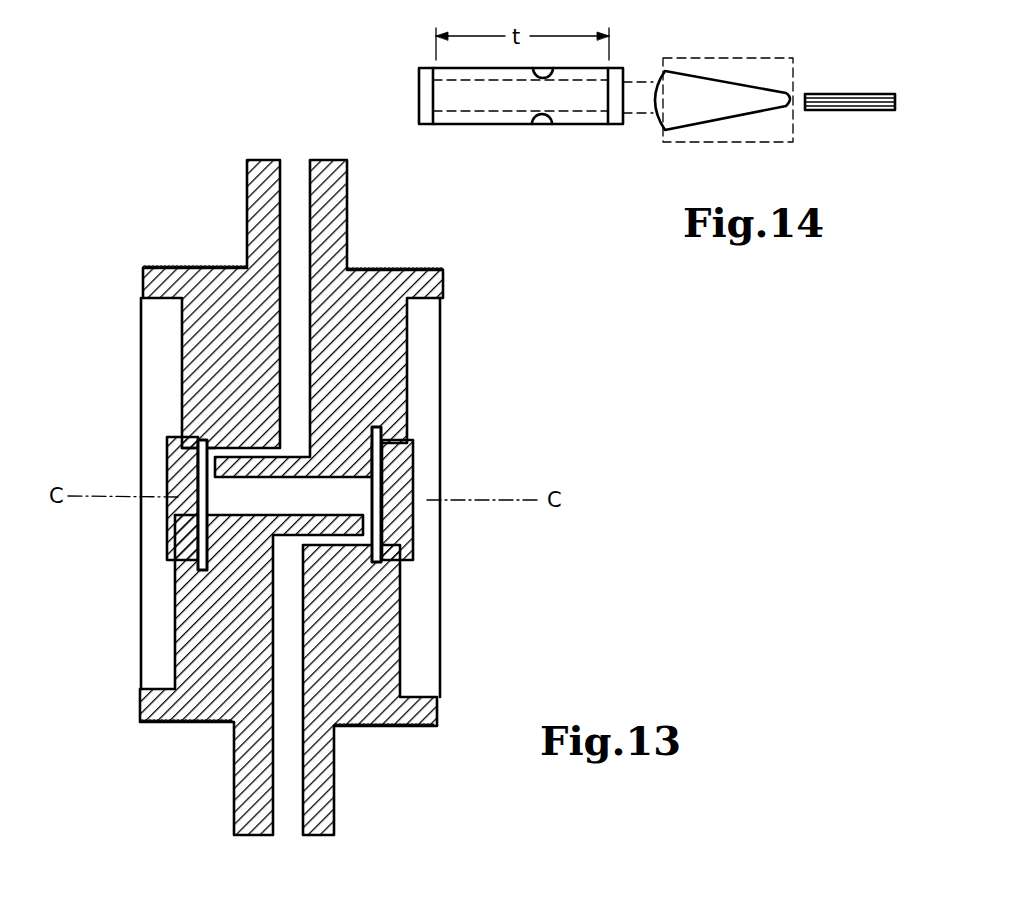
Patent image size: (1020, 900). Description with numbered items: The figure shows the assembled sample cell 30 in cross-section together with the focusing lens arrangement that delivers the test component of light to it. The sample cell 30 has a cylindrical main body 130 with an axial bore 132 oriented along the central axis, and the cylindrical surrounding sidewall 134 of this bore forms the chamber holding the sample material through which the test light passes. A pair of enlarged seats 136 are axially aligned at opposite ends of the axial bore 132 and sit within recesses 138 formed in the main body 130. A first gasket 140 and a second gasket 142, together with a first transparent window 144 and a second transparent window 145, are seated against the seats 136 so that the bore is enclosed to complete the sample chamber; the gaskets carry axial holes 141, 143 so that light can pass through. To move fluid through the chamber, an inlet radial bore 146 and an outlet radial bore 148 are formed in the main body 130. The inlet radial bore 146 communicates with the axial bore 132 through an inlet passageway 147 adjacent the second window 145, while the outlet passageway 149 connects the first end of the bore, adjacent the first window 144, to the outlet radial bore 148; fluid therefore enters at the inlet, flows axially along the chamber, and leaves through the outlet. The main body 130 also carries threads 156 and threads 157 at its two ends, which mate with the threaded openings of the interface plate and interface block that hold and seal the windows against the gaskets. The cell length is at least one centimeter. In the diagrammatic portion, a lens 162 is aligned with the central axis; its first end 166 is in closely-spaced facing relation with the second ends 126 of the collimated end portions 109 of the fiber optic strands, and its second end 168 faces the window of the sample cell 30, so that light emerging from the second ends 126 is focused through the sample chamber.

In FIG. 13, the sample cell 30 is at (390, 240).
In FIG. 14, the sample cell 30 is at (499, 127).
In FIG. 14, the collimated end portions 109 is at (838, 94).
In FIG. 14, the second ends 126 is at (793, 107).
In FIG. 13, the main body 130 is at (397, 340).
In FIG. 13, the axial bore 132 is at (393, 440).
In FIG. 13, the cylindrical surrounding sidewall 134 is at (315, 510).
In FIG. 14, the cylindrical surrounding sidewall 134 is at (548, 72).
In FIG. 13, the enlarged seats 136 is at (207, 570).
In FIG. 13, the recesses 138 is at (168, 675).
In FIG. 13, the first gasket 140 is at (405, 463).
In FIG. 13, the axial hole 141 is at (173, 580).
In FIG. 14, the second gasket 142 is at (623, 125).
In FIG. 13, the axial hole 143 is at (180, 480).
In FIG. 14, the axial hole 143 is at (418, 80).
In FIG. 13, the first transparent window 144 is at (400, 485).
In FIG. 13, the second transparent window 145 is at (173, 518).
In FIG. 13, the inlet radial bore 146 is at (293, 205).
In FIG. 13, the inlet passageway 147 is at (212, 437).
In FIG. 13, the outlet radial bore 148 is at (286, 798).
In FIG. 13, the outlet passageway 149 is at (343, 545).
In FIG. 13, the threads 156 is at (420, 270).
In FIG. 13, the threads 157 is at (188, 267).
In FIG. 14, the lens 162 is at (717, 93).
In FIG. 14, the first end 166 is at (795, 98).
In FIG. 14, the second end 168 is at (655, 78).